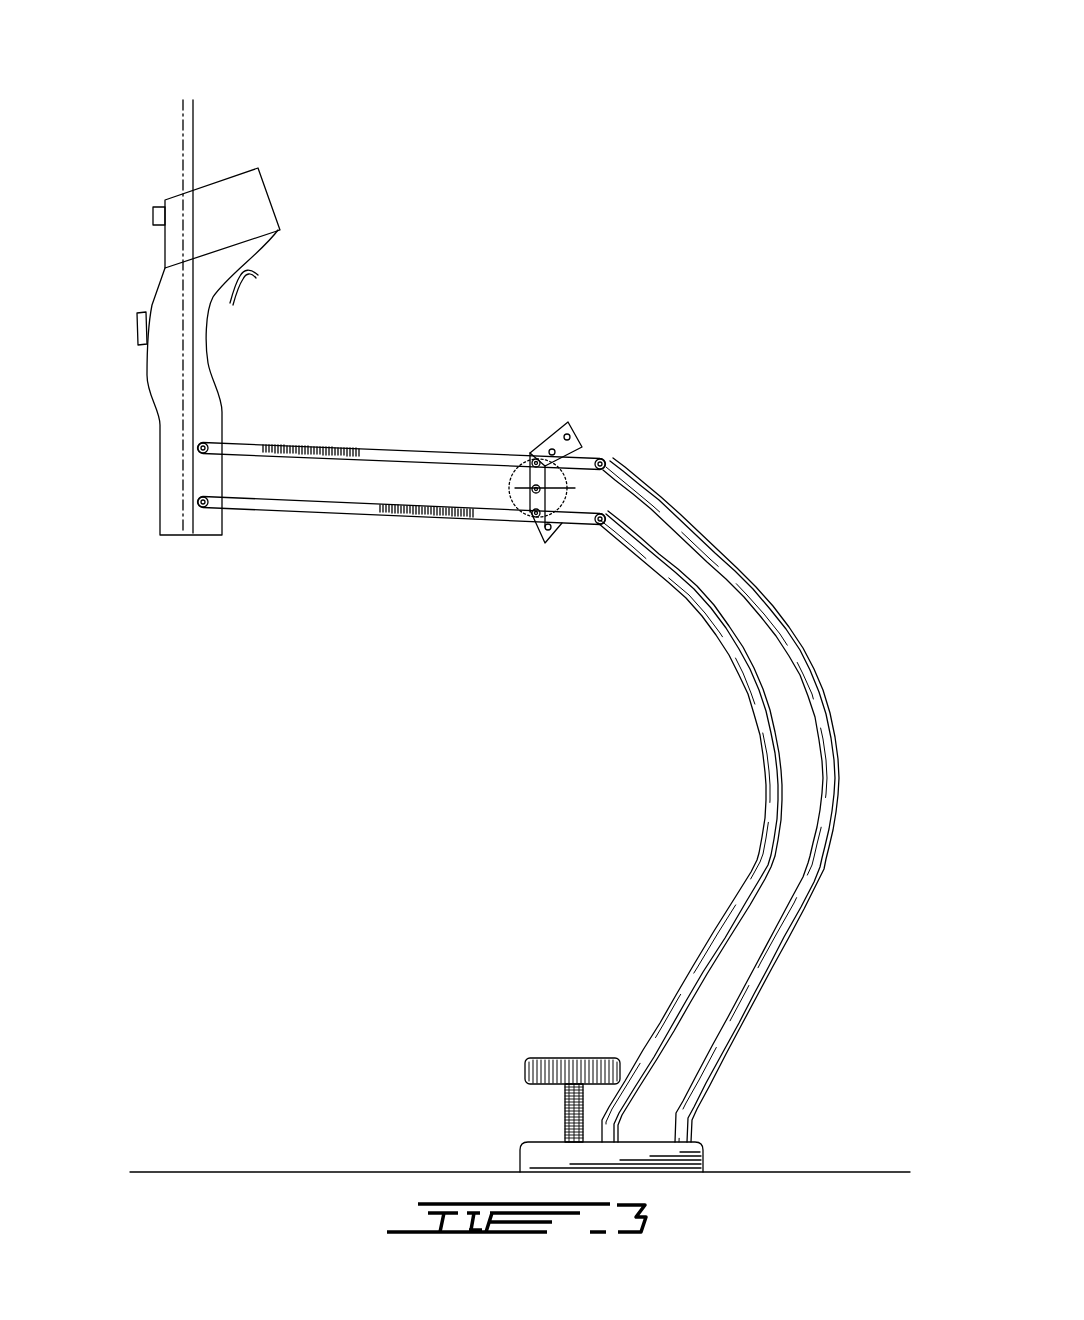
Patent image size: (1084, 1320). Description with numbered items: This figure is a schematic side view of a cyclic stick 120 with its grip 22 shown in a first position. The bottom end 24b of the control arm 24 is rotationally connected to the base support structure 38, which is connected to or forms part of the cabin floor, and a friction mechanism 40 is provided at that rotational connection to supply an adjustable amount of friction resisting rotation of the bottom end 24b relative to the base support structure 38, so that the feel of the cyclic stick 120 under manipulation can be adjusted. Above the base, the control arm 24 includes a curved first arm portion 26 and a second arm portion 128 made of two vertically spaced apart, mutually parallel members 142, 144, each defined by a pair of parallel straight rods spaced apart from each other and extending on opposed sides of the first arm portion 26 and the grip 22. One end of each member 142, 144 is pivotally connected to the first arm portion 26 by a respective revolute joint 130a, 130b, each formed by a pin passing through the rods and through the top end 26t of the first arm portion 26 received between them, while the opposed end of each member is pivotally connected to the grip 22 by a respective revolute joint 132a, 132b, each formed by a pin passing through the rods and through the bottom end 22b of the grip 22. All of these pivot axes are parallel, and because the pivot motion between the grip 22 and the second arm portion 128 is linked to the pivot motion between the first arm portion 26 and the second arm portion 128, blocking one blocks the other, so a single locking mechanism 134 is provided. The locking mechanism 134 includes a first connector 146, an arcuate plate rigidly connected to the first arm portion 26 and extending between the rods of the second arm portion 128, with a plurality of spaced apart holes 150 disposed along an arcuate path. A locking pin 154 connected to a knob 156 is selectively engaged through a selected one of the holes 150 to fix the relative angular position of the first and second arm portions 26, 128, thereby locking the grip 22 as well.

The cyclic stick 120 is at (662, 180).
The grip 22 is at (178, 335).
The bottom end of the grip 22b is at (165, 480).
The second arm portion 128 is at (452, 382).
The member 142 is at (348, 445).
The member 144 is at (343, 512).
The revolute joint 132b is at (210, 445).
The revolute joint 132a is at (205, 510).
The locking mechanism 134 is at (602, 425).
The first connector 146 is at (570, 425).
The holes 150 is at (536, 447).
The knob 156 is at (525, 520).
The locking pin 154 is at (545, 543).
The revolute joint 130b is at (608, 460).
The revolute joint 130a is at (600, 530).
The first arm portion 26 is at (822, 775).
The top end of the first arm portion 26t is at (612, 470).
The control arm 24 is at (818, 946).
The bottom end of the control arm 24b is at (672, 1130).
The base support structure 38 is at (462, 1170).
The friction mechanism 40 is at (555, 1057).